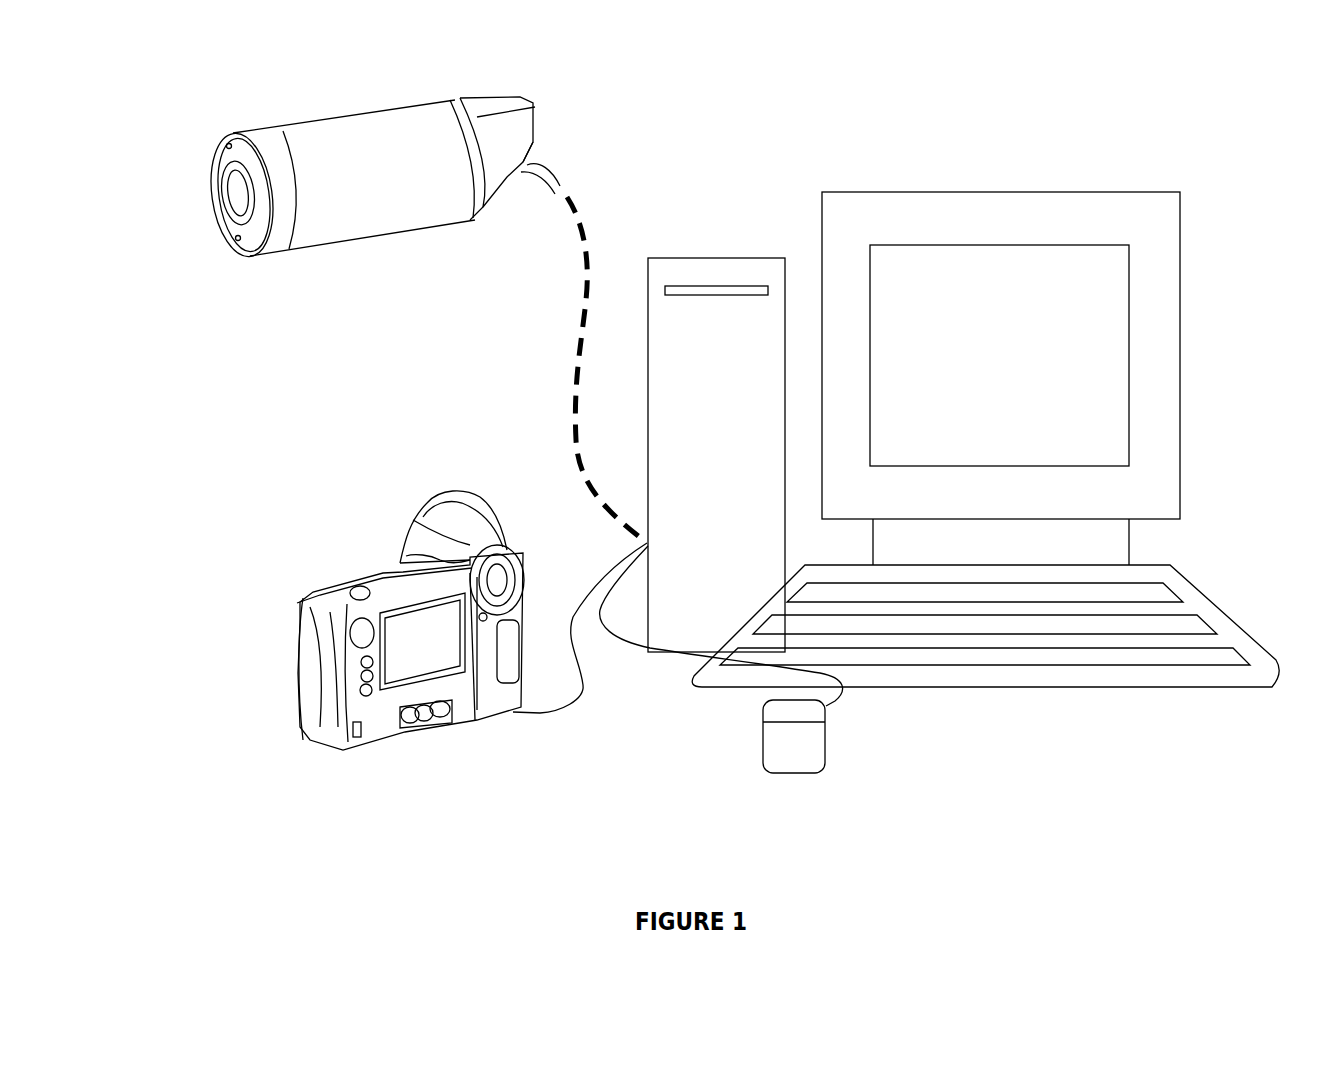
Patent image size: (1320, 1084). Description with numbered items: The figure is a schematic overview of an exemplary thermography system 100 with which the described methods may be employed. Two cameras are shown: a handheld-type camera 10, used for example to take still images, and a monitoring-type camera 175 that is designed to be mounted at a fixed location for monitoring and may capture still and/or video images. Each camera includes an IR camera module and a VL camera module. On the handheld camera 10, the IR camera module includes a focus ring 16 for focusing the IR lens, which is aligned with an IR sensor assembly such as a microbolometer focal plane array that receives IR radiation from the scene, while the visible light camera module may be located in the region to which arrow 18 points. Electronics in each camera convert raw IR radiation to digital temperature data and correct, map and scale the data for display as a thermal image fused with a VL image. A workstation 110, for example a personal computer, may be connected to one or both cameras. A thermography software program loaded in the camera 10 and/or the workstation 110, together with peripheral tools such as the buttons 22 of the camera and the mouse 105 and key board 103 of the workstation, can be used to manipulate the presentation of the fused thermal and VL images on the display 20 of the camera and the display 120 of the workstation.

The handheld-type camera 10 is at (330, 480).
The focus ring 16 is at (406, 556).
The arrow 18 is at (410, 490).
The display 20 is at (397, 670).
The buttons 22 is at (358, 695).
The thermography system 100 is at (630, 165).
The key board 103 is at (1213, 675).
The mouse 105 is at (810, 745).
The workstation 110 is at (747, 220).
The display 120 is at (1098, 346).
The monitoring-type camera 175 is at (278, 290).